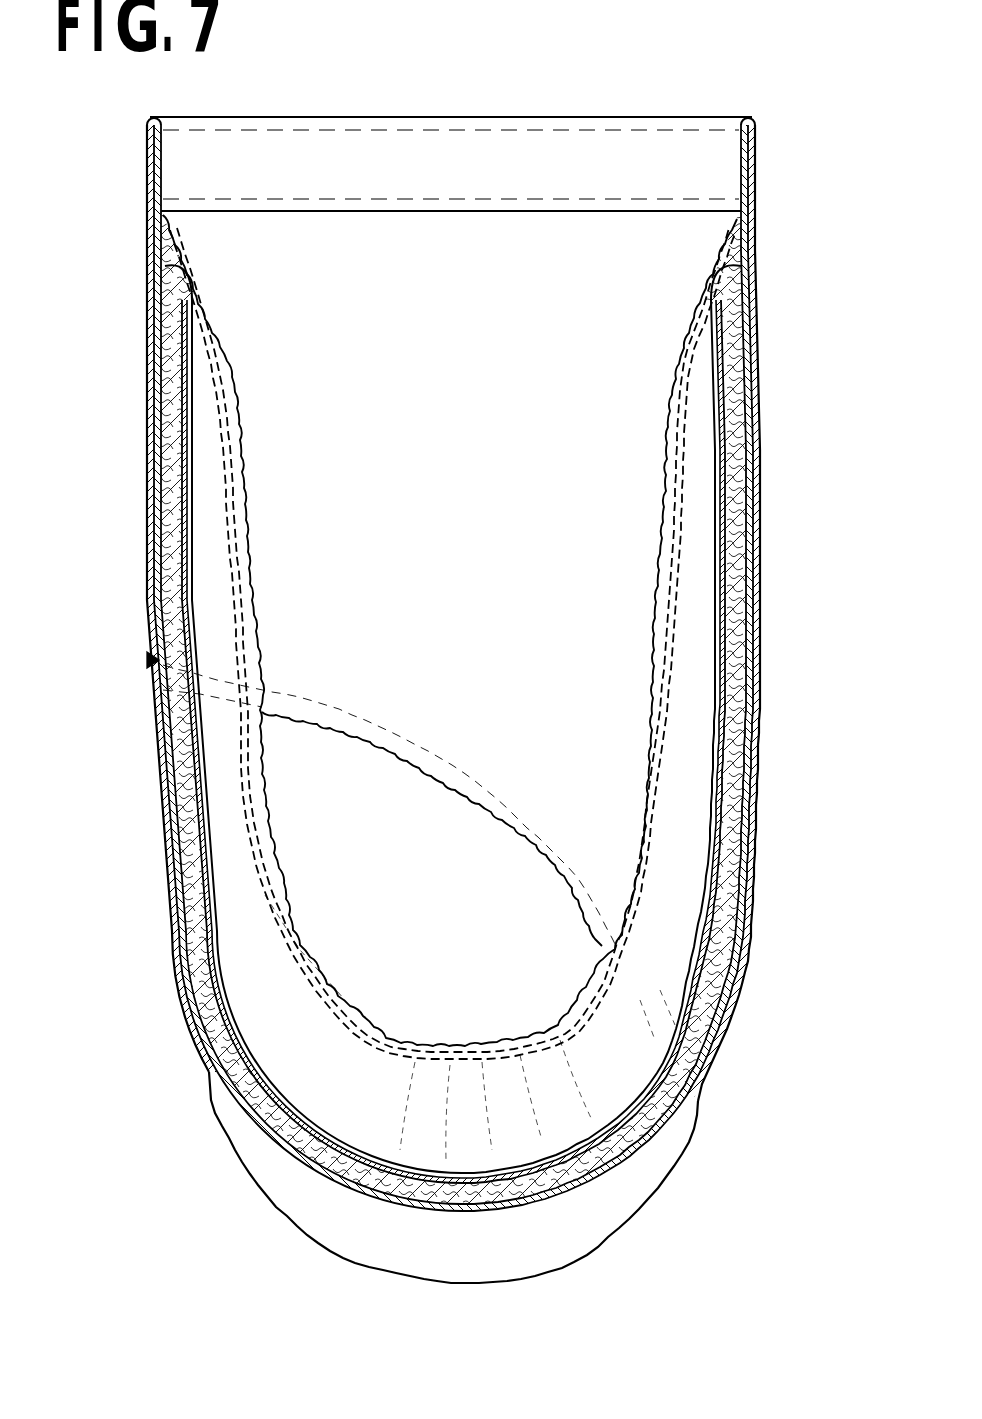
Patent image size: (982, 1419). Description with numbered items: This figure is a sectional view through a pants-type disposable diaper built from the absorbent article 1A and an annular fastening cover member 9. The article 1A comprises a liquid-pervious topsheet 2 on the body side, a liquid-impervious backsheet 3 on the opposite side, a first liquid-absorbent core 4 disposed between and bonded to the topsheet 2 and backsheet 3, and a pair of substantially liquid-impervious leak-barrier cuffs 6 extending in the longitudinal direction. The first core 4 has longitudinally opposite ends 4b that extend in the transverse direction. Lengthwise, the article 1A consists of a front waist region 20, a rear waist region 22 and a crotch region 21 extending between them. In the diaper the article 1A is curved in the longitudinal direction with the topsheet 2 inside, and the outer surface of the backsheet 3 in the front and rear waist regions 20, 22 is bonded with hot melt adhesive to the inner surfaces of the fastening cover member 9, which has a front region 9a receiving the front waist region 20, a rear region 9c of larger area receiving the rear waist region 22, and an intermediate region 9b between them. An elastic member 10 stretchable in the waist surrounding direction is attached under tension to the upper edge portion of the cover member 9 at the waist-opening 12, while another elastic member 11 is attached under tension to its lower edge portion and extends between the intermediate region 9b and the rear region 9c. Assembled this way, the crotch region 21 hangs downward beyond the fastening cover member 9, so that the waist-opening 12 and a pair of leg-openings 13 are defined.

The article 1A is at (220, 1070).
The topsheet 2 is at (200, 853).
The backsheet 3 is at (172, 886).
The first core 4 is at (205, 960).
The longitudinally opposite ends 4b is at (163, 275).
The leak-barrier cuffs 6 is at (448, 1073).
The fastening cover member 9 is at (705, 1110).
The front region 9a is at (150, 445).
The intermediate region 9b is at (388, 238).
The rear region 9c is at (757, 456).
The elastic member 10 is at (747, 160).
The elastic member 11 is at (148, 660).
The waist-opening 12 is at (597, 225).
The leg-openings 13 is at (390, 803).
The front waist region 20 is at (160, 738).
The crotch region 21 is at (517, 1207).
The rear waist region 22 is at (757, 560).